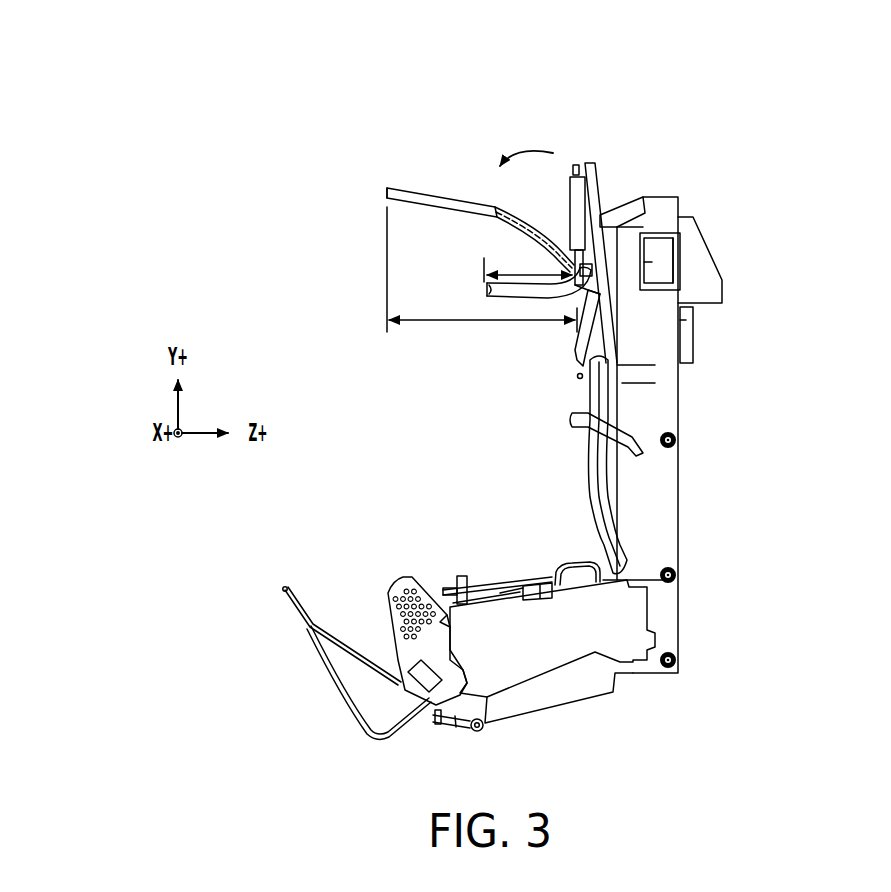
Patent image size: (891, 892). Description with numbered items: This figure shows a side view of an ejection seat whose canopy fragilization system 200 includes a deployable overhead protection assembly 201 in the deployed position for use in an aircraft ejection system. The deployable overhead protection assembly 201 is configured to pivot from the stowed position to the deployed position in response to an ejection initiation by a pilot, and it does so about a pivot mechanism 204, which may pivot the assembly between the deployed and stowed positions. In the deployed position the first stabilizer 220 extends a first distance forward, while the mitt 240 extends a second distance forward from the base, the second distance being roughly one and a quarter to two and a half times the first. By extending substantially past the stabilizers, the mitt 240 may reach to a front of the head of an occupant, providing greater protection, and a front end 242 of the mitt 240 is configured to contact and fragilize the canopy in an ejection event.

The canopy fragilization system 200 is at (770, 55).
The deployable overhead protection assembly 201 is at (540, 122).
The pivot mechanism 204 is at (560, 248).
The first stabilizer 220 is at (487, 293).
The mitt 240 is at (429, 196).
The front end 242 is at (387, 188).